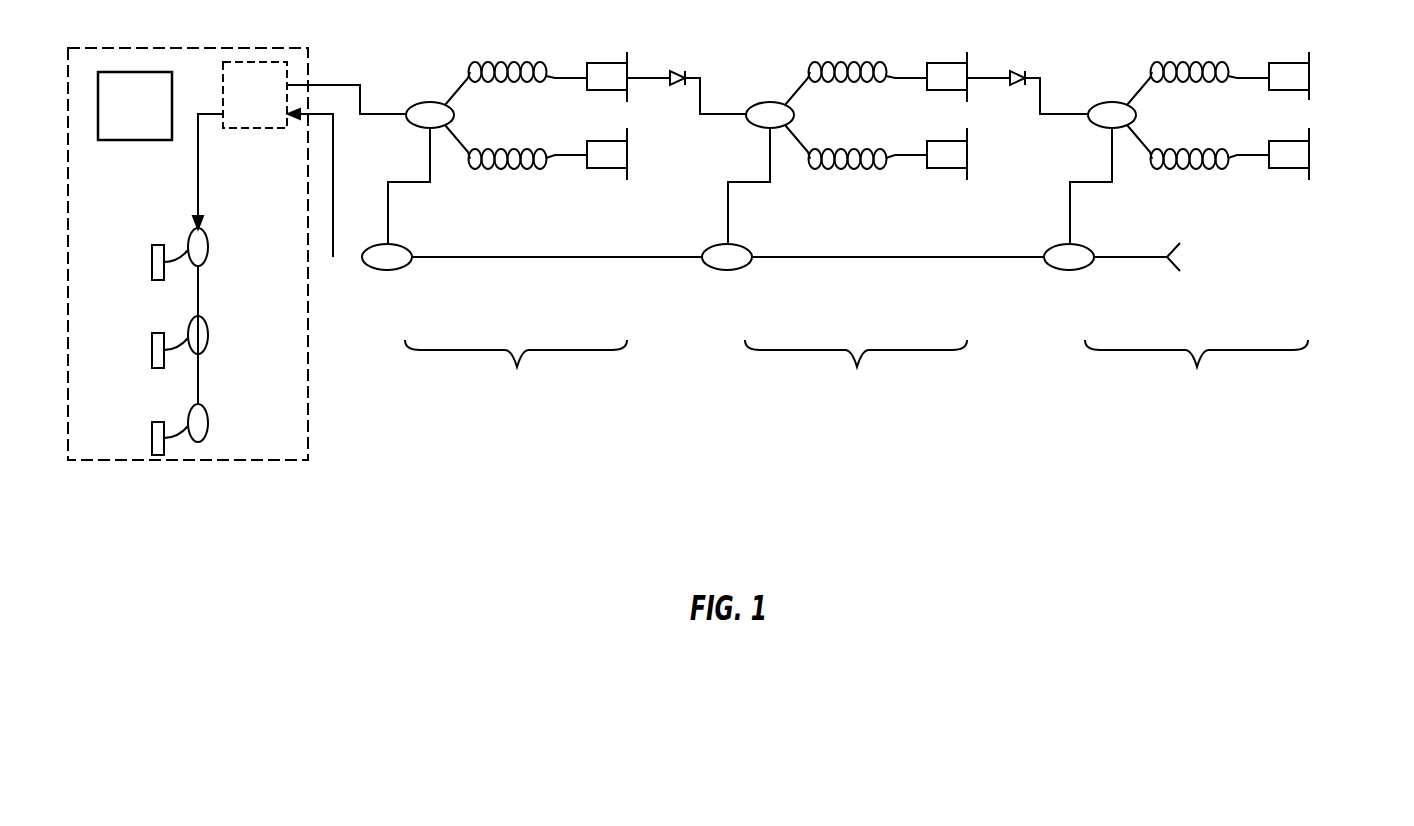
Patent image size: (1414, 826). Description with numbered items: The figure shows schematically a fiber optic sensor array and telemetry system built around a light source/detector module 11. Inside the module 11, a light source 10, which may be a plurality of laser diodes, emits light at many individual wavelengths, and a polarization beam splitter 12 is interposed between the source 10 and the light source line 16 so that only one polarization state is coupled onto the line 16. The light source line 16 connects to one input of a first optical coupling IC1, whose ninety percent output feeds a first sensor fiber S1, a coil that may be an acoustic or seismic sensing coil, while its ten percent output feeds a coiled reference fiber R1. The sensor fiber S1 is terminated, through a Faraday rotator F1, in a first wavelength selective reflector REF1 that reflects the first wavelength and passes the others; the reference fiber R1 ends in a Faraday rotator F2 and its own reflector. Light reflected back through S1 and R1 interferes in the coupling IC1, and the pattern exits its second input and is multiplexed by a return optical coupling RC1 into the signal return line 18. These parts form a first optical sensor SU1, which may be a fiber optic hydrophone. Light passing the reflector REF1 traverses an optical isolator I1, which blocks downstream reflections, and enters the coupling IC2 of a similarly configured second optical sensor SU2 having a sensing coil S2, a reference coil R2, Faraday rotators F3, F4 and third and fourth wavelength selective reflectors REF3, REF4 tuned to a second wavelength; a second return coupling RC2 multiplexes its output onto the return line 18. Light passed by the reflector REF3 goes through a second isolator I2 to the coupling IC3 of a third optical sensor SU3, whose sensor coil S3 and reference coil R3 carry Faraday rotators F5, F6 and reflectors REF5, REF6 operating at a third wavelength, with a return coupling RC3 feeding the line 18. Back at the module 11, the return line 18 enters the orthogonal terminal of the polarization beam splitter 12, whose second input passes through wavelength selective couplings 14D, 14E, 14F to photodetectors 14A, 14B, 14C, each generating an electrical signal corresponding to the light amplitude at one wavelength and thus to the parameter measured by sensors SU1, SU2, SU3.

The light source 10 is at (155, 140).
The light source/detector module 11 is at (95, 462).
The polarization beam splitter 12 is at (242, 56).
The photodetector 14A is at (152, 268).
The photodetector 14B is at (152, 358).
The photodetector 14C is at (152, 445).
The wavelength selective coupling 14D is at (210, 252).
The wavelength selective coupling 14E is at (210, 342).
The wavelength selective coupling 14F is at (210, 428).
The light source line 16 is at (373, 117).
The signal return line 18 is at (333, 210).
The first optical coupling IC1 is at (426, 102).
The optical coupling IC2 is at (766, 102).
The optical coupling IC3 is at (1108, 102).
The first sensor fiber S1 is at (510, 60).
The sensing fiber S2 is at (850, 60).
The sensor coil S3 is at (1193, 60).
The reference fiber R1 is at (517, 150).
The reference fiber R2 is at (857, 150).
The reference coil R3 is at (1199, 150).
The first Faraday rotator F1 is at (602, 63).
The Faraday rotator F2 is at (602, 141).
The first Faraday rotator F3 is at (942, 63).
The Faraday rotator F4 is at (942, 141).
The first Faraday rotator F5 is at (1285, 63).
The Faraday rotator F6 is at (1285, 141).
The first wavelength selective reflector REF1 is at (632, 60).
The third wavelength selective reflector REF3 is at (972, 60).
The fourth wavelength selective reflector REF4 is at (972, 170).
The wavelength selective reflector REF5 is at (1316, 60).
The wavelength selective reflector REF6 is at (1316, 170).
The optical isolator I1 is at (676, 86).
The optical isolator I2 is at (1016, 86).
The return optical coupling RC1 is at (385, 270).
The second return coupling RC2 is at (725, 270).
The return coupling RC3 is at (1067, 270).
The first optical sensor SU1 is at (516, 374).
The second optical sensor SU2 is at (856, 374).
The third optical sensor SU3 is at (1196, 374).